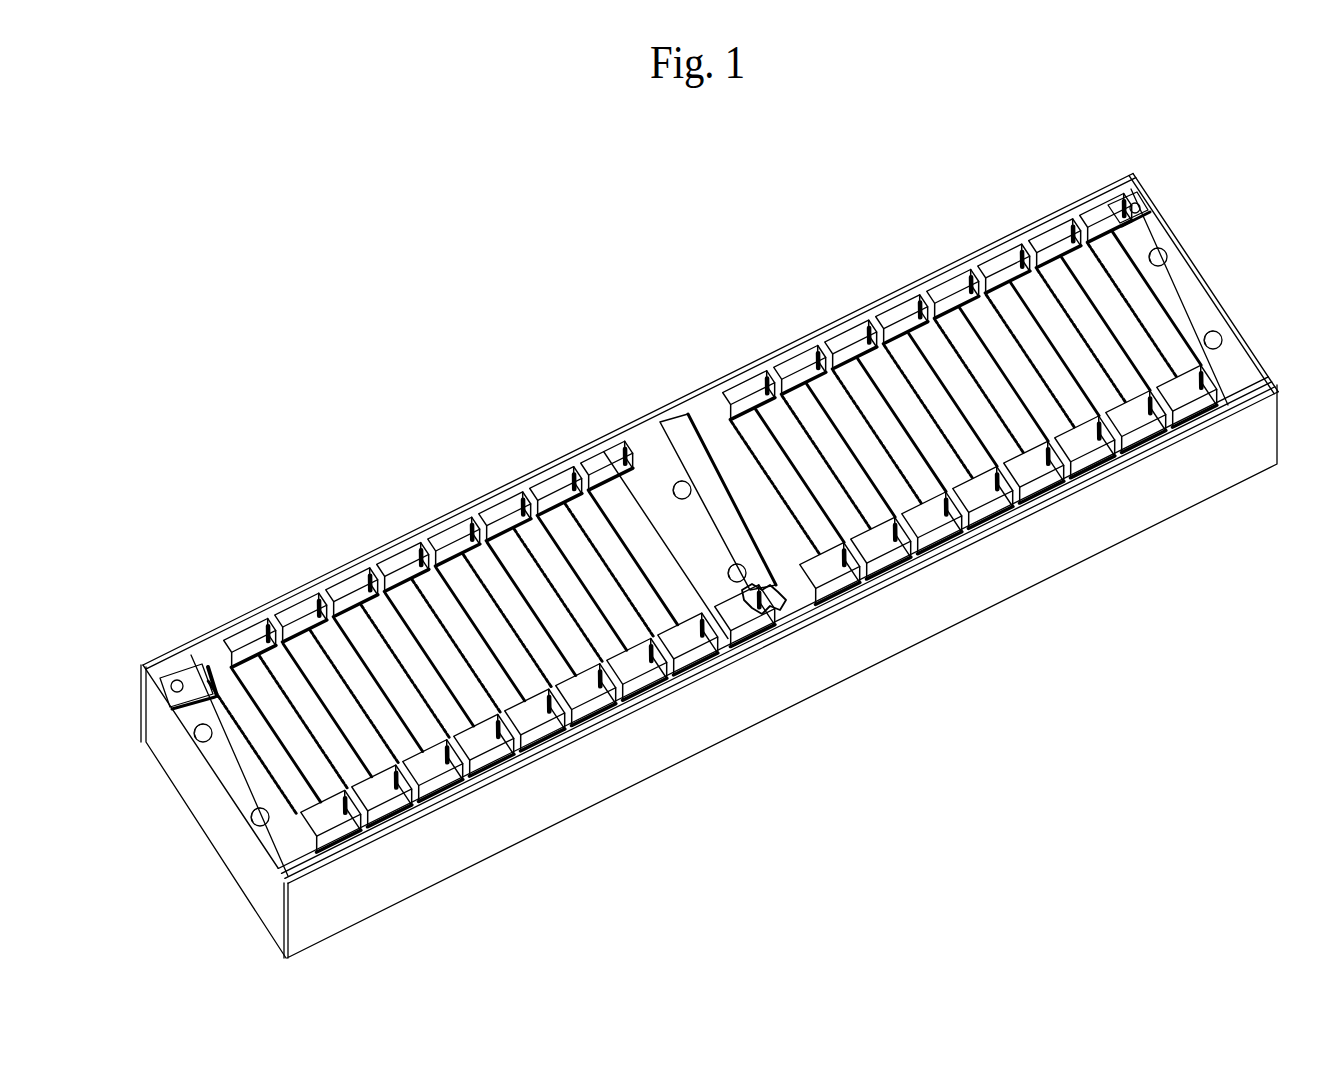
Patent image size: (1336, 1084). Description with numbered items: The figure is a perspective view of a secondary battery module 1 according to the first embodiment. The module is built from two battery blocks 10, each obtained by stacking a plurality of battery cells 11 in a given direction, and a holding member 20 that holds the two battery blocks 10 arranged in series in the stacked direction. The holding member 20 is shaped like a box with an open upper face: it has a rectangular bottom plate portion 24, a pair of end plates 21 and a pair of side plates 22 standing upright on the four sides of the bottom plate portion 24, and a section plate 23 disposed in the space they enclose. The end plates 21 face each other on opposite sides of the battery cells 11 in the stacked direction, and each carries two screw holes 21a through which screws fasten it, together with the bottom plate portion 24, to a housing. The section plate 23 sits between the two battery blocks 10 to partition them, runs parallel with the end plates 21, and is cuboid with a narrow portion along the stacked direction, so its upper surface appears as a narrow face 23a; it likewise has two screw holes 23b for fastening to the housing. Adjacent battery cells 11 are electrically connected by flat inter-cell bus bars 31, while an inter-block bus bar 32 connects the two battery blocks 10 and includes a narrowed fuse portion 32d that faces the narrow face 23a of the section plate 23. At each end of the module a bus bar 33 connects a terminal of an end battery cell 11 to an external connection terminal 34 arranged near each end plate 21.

The secondary battery module 1 is at (345, 305).
The battery block 10 is at (368, 648).
The battery cell 11 is at (270, 765).
The holding member 20 is at (1225, 295).
The end plate 21 is at (190, 780).
The screw hole 21a is at (203, 733).
The side plate 22 is at (855, 300).
The section plate 23 is at (830, 580).
The narrow face 23a is at (703, 523).
The screw hole 23b is at (683, 490).
The bottom plate portion 24 is at (560, 830).
The inter-cell bus bar 31 is at (335, 820).
The inter-block bus bar 32 is at (745, 620).
The fuse portion 32d is at (770, 600).
The bus bar 33 is at (177, 680).
The external connection terminal 34 is at (170, 688).